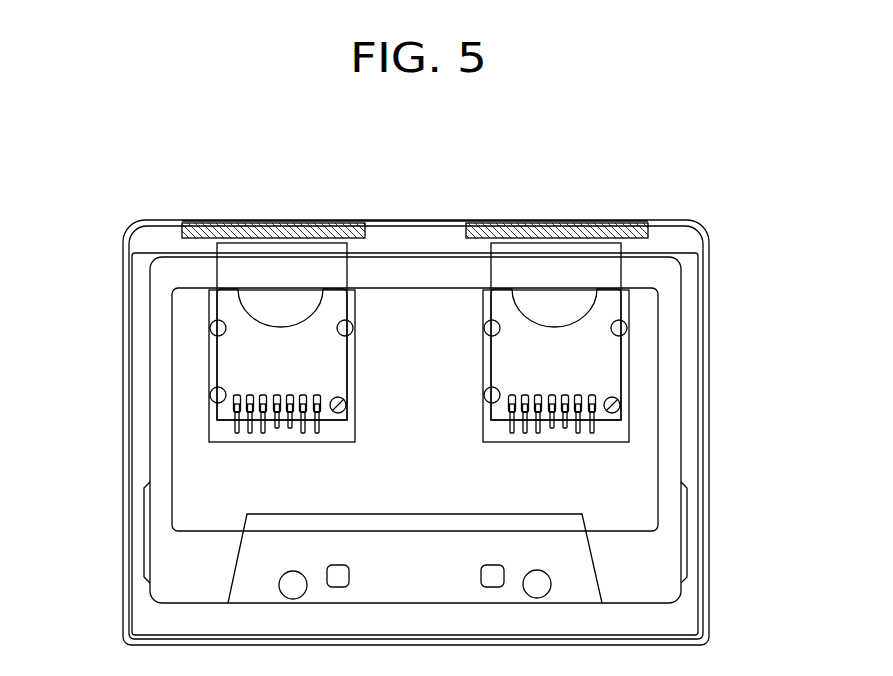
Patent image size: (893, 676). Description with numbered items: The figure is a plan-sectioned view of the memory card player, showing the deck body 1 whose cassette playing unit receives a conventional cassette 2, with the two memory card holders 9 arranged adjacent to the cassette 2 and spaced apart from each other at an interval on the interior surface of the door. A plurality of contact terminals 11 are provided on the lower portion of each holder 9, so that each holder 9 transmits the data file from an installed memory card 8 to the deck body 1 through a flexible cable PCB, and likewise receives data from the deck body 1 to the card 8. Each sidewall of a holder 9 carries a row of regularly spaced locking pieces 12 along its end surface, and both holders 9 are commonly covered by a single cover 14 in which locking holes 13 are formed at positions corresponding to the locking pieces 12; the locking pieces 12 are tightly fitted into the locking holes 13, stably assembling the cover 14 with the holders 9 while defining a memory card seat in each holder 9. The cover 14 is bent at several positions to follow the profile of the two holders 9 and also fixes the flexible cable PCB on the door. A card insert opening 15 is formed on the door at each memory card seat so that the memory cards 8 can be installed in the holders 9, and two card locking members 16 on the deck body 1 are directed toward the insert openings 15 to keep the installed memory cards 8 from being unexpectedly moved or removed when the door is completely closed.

The deck body 1 is at (707, 570).
The cassette 2 is at (670, 534).
The memory card 8 is at (225, 278).
The memory card holder 9 is at (268, 323).
The contact terminals 11 is at (237, 432).
The locking pieces 12 is at (210, 329).
The locking holes 13 is at (217, 393).
The cover 14 is at (217, 425).
The card insert opening 15 is at (310, 225).
The card locking members 16 is at (248, 231).